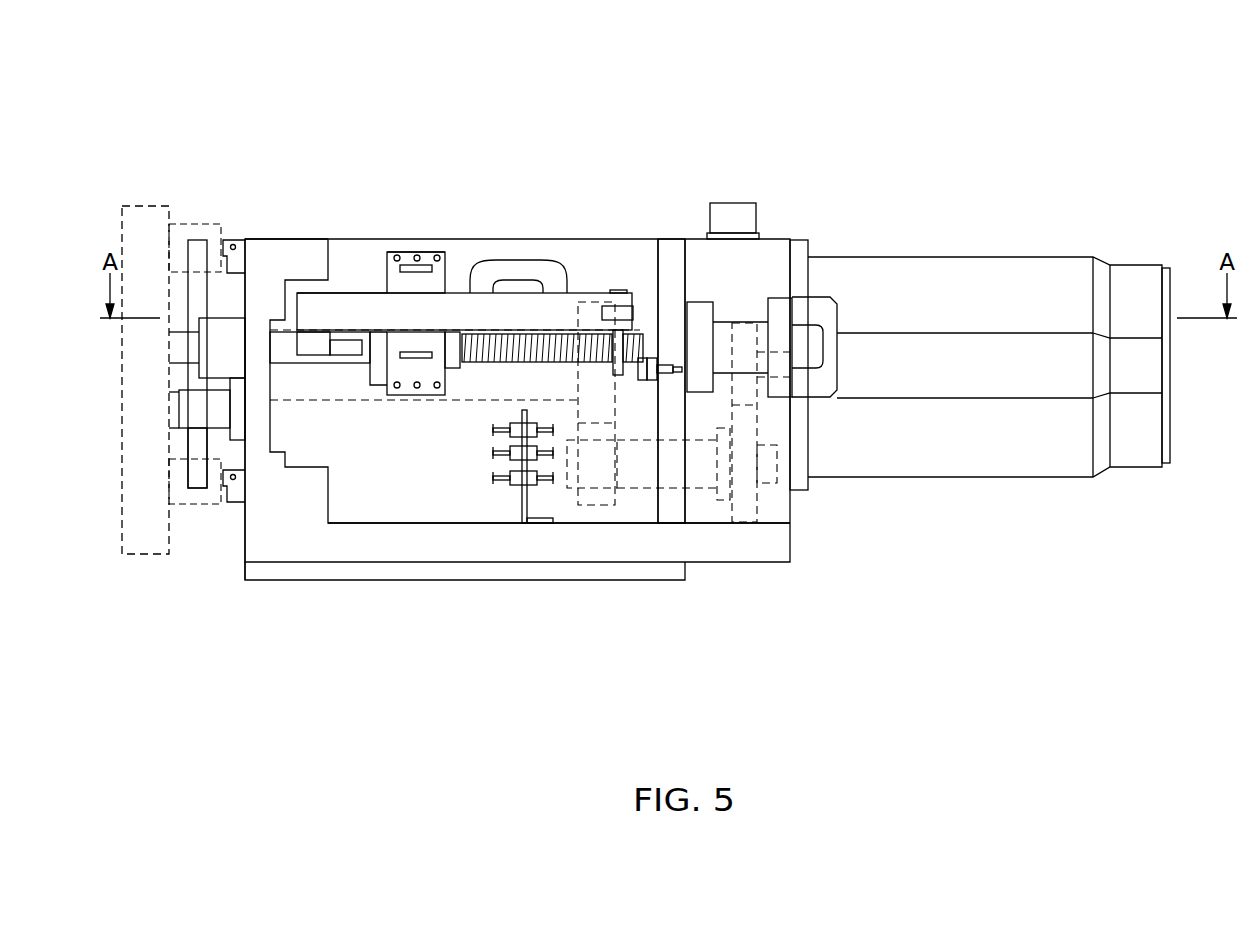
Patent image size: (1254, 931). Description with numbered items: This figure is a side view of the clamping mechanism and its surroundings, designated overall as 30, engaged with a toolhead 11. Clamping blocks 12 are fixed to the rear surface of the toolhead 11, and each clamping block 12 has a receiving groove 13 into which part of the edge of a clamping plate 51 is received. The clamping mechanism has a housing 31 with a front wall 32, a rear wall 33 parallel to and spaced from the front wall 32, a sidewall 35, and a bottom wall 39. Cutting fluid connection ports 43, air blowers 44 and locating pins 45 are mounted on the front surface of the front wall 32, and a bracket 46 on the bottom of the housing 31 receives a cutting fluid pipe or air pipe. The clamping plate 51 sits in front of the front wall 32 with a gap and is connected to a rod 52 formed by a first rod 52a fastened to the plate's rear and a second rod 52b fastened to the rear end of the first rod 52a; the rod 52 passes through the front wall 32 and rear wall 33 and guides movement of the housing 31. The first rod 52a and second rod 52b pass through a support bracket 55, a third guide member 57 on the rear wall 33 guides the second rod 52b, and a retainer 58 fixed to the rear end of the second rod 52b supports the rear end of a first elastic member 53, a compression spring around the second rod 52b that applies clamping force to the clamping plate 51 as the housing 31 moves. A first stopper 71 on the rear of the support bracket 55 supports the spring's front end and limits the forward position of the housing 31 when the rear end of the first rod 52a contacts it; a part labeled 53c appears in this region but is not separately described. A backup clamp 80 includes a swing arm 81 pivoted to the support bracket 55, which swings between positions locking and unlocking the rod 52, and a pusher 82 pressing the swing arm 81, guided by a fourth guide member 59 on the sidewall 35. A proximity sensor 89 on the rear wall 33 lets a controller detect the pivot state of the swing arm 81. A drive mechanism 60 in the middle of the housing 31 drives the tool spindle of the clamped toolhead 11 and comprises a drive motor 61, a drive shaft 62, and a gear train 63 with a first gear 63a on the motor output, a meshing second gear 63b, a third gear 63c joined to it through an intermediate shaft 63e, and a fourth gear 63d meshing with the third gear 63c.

The lens driving apparatus 30 is at (343, 84).
The toolhead 11 is at (140, 206).
The clamping block 12 is at (195, 224).
The receiving groove 13 is at (190, 248).
The housing 31 is at (232, 560).
The front wall 32 is at (285, 243).
The rear wall 33 is at (672, 248).
The sidewall 35 is at (580, 250).
The bottom wall 39 is at (458, 548).
The cutting fluid connection port 43 is at (187, 428).
The air blower 44 is at (180, 366).
The locating pin 45 is at (236, 240).
The bracket 46 is at (522, 507).
The clamping plate 51 is at (195, 313).
The rod 52 is at (451, 292).
The first rod 52a is at (288, 355).
The second rod 52b is at (470, 330).
The first elastic member 53 is at (472, 332).
The screw bearing bracket 53c is at (811, 310).
The support bracket 55 is at (437, 283).
The third guide member 57 is at (700, 307).
The retainer 58 is at (758, 317).
The fourth guide member 59 is at (543, 270).
The drive mechanism 60 is at (720, 463).
The drive motor 61 is at (962, 256).
The drive shaft 62 is at (418, 400).
The gear train 63 is at (558, 677).
The first gear 63a is at (727, 395).
The second gear 63b is at (738, 522).
The third gear 63c is at (617, 420).
The fourth gear 63d is at (633, 492).
The intermediate shaft 63e is at (645, 490).
The first stopper 71 is at (453, 372).
The backup clamp 80 is at (343, 278).
The swing arm 81 is at (367, 302).
The pusher 82 is at (517, 287).
The proximity sensor 89 is at (647, 262).